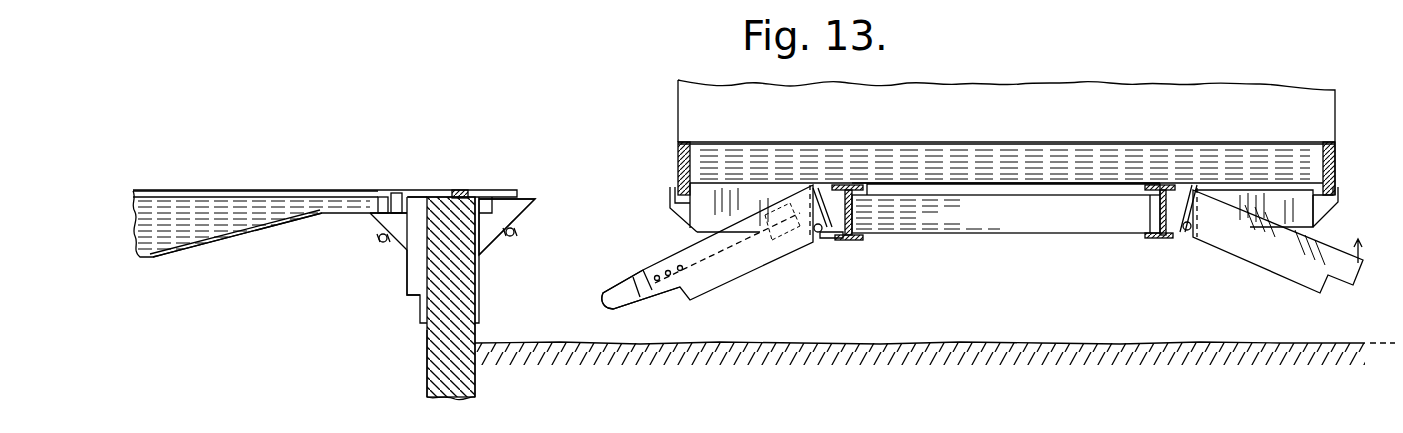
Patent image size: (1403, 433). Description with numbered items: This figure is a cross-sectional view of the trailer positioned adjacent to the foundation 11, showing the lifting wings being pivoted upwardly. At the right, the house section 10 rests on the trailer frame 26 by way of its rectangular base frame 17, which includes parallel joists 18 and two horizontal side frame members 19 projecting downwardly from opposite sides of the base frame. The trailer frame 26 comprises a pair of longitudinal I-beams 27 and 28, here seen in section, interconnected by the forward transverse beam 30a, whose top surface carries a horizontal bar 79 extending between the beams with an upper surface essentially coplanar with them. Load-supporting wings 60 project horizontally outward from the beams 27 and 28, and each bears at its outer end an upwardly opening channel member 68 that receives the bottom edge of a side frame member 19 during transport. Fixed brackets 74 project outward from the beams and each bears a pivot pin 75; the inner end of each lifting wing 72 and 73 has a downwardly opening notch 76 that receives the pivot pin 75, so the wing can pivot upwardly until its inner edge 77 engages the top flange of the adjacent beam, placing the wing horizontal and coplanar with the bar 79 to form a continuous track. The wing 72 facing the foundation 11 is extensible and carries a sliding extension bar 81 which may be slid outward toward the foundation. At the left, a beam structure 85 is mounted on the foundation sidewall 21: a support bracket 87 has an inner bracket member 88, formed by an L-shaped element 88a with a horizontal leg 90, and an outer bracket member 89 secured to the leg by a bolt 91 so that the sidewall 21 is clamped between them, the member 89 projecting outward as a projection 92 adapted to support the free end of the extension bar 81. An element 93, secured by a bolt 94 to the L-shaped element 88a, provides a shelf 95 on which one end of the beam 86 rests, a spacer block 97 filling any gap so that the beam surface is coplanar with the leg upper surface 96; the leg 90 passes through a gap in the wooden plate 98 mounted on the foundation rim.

The house section 10 is at (1036, 115).
The foundation 11 is at (425, 355).
The base frame 17 is at (757, 156).
The joists 18 is at (948, 169).
The side frame members 19 is at (680, 160).
The sidewalls 21 is at (440, 375).
The trailer frame 26 is at (981, 241).
The longitudinal beam 27 is at (860, 240).
The longitudinal beam 28 is at (1150, 238).
The forward transverse beam 30a is at (1062, 214).
The load-supporting wings 60 is at (707, 210).
The channel member 68 is at (668, 190).
The lifting wing 72 is at (745, 272).
The lifting wing 73 is at (1245, 250).
The bracket 74 is at (845, 185).
The pivot pin 75 is at (837, 238).
The notch 76 is at (818, 235).
The inner edge 77 is at (823, 185).
The horizontal bar 79 is at (1010, 186).
The extension bar 81 is at (610, 290).
The beam structure 85 is at (237, 176).
The beam 86 is at (200, 225).
The support bracket 87 is at (497, 256).
The inner bracket member 88 is at (405, 248).
The L-shaped element 88a is at (410, 283).
The outer bracket member 89 is at (485, 207).
The horizontal leg 90 is at (430, 197).
The bolt 91 is at (515, 233).
The projection 92 is at (530, 200).
The element 93 is at (372, 222).
The bolt 94 is at (381, 240).
The shelf 95 is at (382, 198).
The upper surfaces 96 is at (500, 190).
The spacer block 97 is at (396, 200).
The wooden plate 98 is at (458, 190).